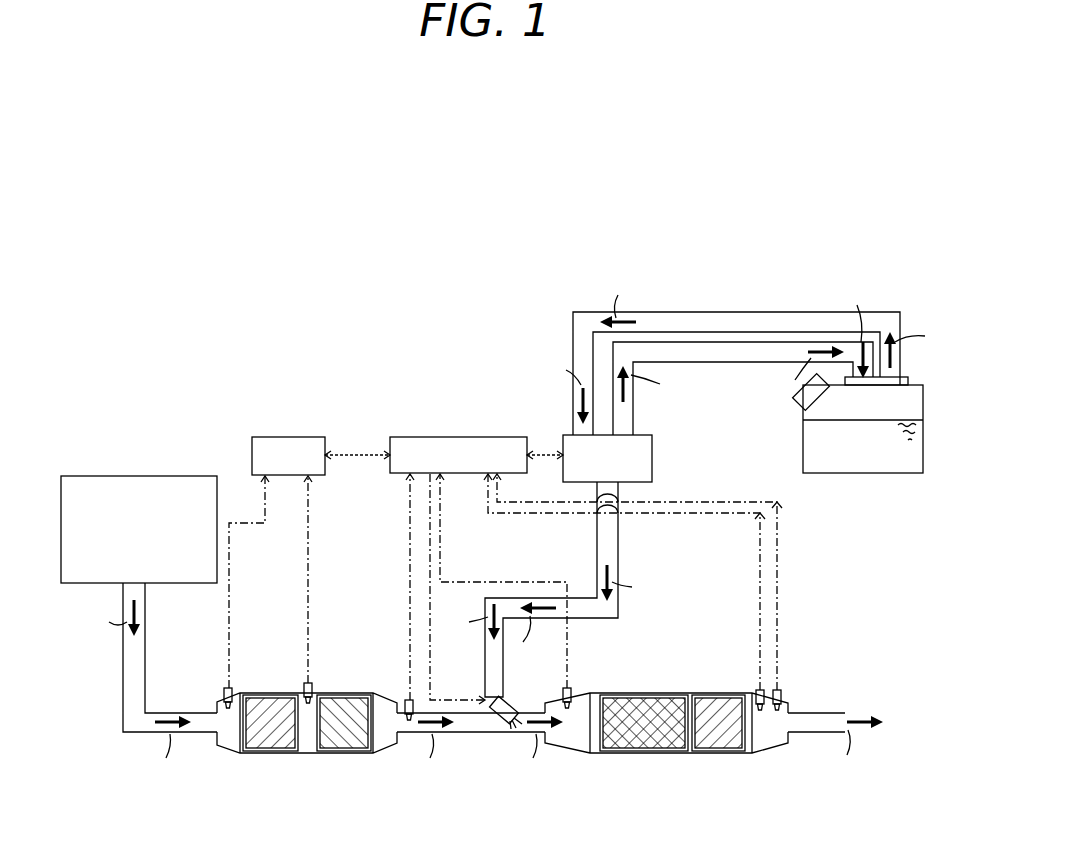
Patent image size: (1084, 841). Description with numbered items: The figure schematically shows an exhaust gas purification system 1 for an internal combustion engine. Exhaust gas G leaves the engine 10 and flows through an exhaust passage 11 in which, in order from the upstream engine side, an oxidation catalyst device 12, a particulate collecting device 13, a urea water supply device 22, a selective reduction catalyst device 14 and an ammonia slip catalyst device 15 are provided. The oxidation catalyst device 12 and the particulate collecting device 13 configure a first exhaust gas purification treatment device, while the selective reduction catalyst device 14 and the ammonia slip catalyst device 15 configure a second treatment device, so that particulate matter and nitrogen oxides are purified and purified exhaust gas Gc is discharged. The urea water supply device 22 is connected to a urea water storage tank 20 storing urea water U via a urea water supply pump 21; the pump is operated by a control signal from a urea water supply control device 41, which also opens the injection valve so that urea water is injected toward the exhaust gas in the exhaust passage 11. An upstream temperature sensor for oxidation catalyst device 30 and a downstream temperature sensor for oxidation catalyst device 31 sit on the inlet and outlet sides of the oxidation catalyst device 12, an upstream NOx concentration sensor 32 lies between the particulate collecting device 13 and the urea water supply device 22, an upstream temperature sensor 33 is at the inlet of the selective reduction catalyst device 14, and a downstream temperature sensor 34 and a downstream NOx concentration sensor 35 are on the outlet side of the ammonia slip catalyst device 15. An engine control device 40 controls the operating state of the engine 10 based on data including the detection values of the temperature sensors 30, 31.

The exhaust gas purification system 1 is at (479, 376).
The engine 10 is at (141, 476).
The exhaust passage 11 is at (195, 733).
The oxidation catalyst device 12 is at (275, 754).
The particulate collecting device 13 is at (348, 754).
The selective reduction catalyst device 14 is at (628, 754).
The ammonia slip catalyst device 15 is at (722, 754).
The urea water storage tank 20 is at (915, 385).
The urea water supply pump 21 is at (568, 435).
The urea water supply device 22 is at (507, 733).
The upstream temperature sensor for oxidation catalyst device 30 is at (225, 687).
The downstream temperature sensor for oxidation catalyst device 31 is at (305, 682).
The upstream NOx concentration sensor 32 is at (406, 700).
The upstream temperature sensor 33 is at (563, 690).
The downstream temperature sensor 34 is at (756, 690).
The downstream NOx concentration sensor 35 is at (781, 694).
The engine control device 40 is at (285, 437).
The urea water supply control device 41 is at (462, 437).